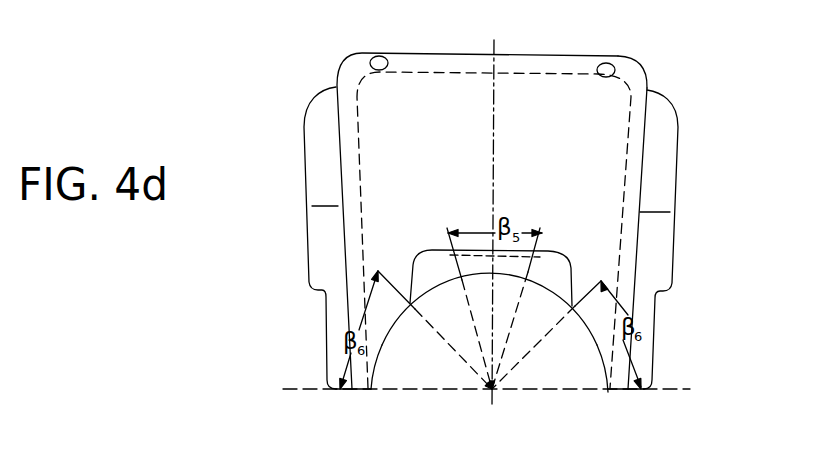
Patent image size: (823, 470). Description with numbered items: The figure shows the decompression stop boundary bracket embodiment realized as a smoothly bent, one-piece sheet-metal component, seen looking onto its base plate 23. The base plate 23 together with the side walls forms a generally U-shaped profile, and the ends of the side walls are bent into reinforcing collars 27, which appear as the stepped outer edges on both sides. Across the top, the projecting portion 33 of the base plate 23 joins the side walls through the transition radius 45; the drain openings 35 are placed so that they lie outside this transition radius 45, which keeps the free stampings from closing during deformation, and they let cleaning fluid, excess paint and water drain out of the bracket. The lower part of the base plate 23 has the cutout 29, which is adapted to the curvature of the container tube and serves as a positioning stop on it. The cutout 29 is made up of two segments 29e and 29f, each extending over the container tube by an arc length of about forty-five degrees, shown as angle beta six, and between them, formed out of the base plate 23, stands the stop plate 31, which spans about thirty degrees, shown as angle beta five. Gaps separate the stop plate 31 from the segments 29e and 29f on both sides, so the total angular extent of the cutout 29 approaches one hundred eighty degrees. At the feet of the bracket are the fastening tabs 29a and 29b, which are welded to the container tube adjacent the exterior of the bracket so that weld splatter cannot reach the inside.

The base plate 23 is at (593, 187).
The collars 27 is at (322, 140).
The cutout 29 is at (582, 336).
The fastening tab 29a is at (363, 391).
The fastening tab 29b is at (618, 383).
The segment of the cutout 29e is at (380, 345).
The segment of the cutout 29f is at (600, 352).
The stop plate 31 is at (478, 258).
The projecting portion 33 is at (535, 68).
The openings 35 is at (378, 66).
The transition radius 45 is at (655, 71).